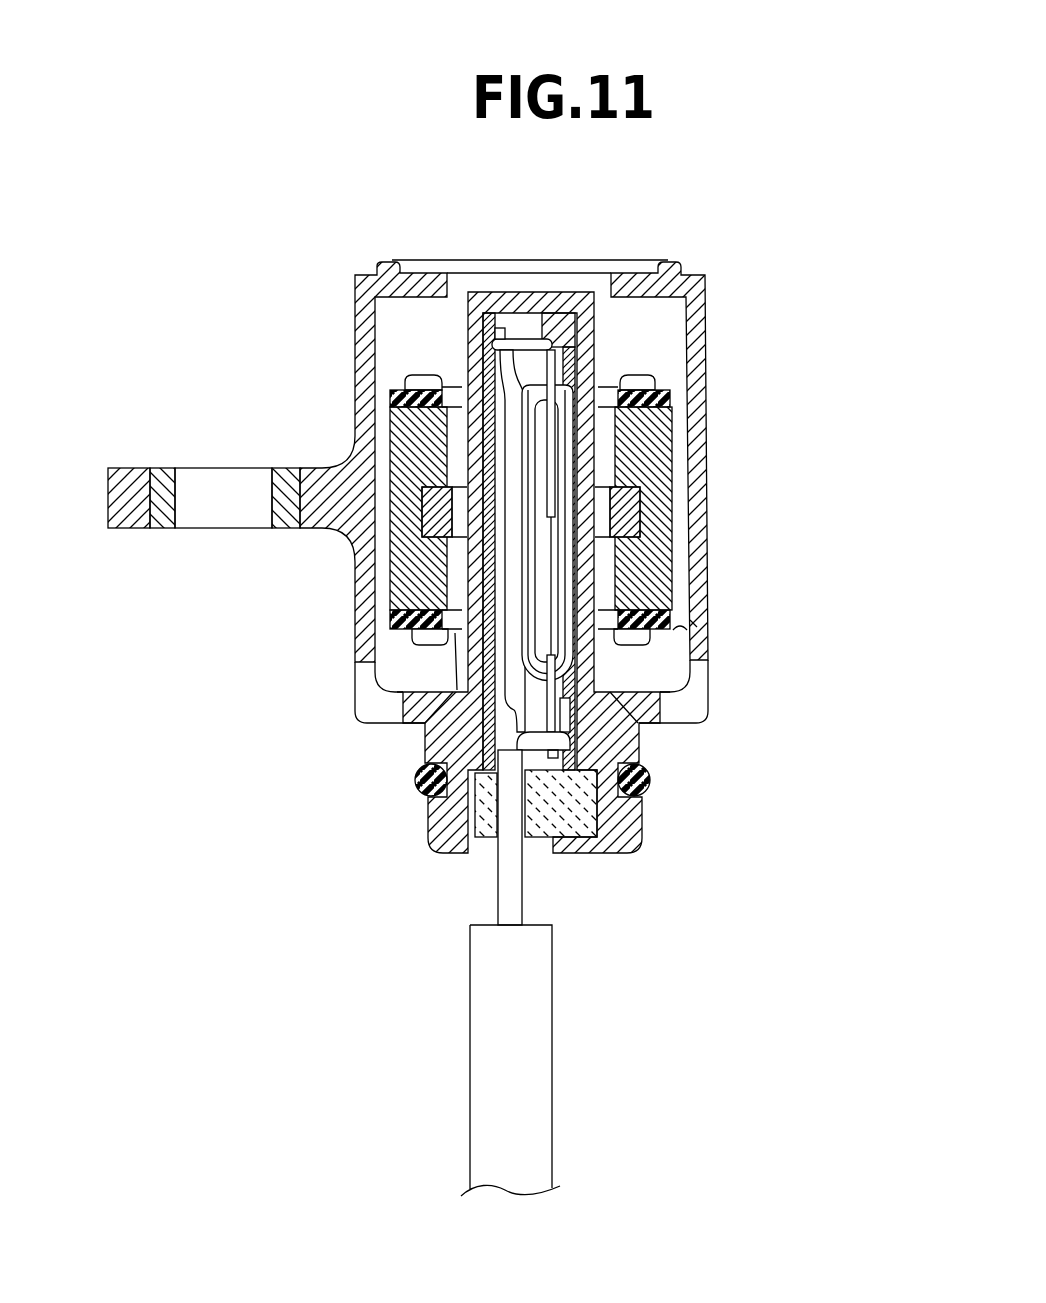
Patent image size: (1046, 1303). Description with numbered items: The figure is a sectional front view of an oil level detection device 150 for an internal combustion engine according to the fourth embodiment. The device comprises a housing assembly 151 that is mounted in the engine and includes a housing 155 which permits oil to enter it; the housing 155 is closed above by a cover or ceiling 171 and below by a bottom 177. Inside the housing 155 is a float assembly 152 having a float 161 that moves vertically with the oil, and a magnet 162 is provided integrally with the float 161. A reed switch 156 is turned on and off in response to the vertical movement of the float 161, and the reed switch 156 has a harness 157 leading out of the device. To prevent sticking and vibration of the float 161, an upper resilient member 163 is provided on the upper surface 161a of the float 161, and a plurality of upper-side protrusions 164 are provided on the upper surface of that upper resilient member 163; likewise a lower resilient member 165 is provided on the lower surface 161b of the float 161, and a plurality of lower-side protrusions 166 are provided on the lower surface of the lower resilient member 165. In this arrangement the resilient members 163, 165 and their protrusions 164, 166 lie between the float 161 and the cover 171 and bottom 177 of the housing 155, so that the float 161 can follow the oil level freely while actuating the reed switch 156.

The oil level detection device 150 is at (170, 76).
The housing assembly 151 is at (728, 388).
The float assembly 152 is at (686, 462).
The housing 155 is at (728, 509).
The reed switch 156 is at (557, 575).
The harness 157 is at (580, 1047).
The float 161 is at (663, 567).
The upper surface of the float 161a is at (453, 380).
The lower surface of the float 161b is at (425, 728).
The magnet 162 is at (370, 437).
The upper resilient member 163 is at (666, 370).
The upper-side protrusions 164 is at (353, 278).
The lower resilient member 165 is at (708, 622).
The lower-side protrusions 166 is at (425, 632).
The cover of the housing 171 is at (637, 283).
The bottom of the housing 177 is at (597, 660).